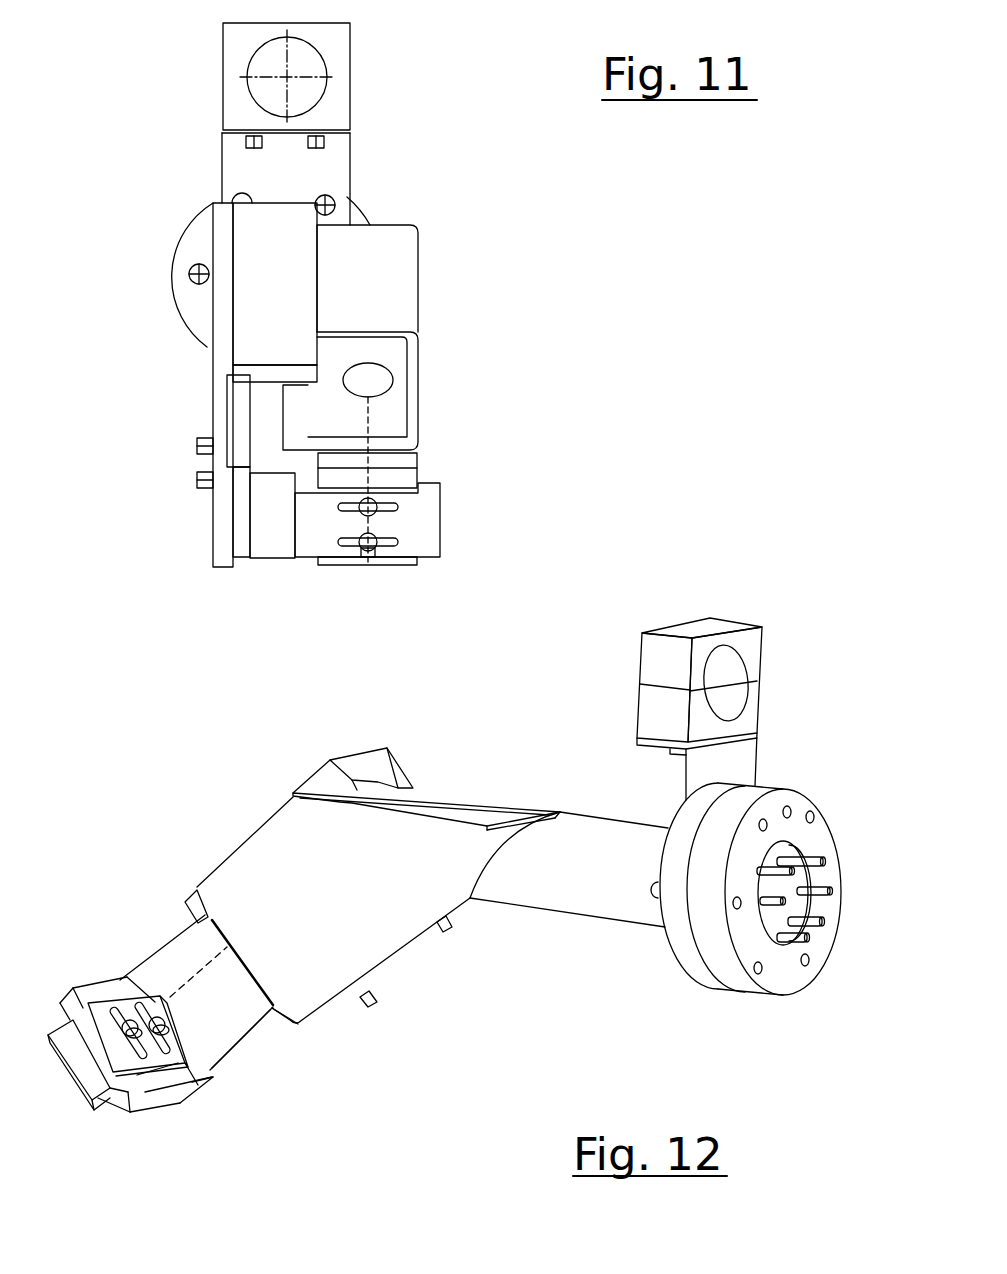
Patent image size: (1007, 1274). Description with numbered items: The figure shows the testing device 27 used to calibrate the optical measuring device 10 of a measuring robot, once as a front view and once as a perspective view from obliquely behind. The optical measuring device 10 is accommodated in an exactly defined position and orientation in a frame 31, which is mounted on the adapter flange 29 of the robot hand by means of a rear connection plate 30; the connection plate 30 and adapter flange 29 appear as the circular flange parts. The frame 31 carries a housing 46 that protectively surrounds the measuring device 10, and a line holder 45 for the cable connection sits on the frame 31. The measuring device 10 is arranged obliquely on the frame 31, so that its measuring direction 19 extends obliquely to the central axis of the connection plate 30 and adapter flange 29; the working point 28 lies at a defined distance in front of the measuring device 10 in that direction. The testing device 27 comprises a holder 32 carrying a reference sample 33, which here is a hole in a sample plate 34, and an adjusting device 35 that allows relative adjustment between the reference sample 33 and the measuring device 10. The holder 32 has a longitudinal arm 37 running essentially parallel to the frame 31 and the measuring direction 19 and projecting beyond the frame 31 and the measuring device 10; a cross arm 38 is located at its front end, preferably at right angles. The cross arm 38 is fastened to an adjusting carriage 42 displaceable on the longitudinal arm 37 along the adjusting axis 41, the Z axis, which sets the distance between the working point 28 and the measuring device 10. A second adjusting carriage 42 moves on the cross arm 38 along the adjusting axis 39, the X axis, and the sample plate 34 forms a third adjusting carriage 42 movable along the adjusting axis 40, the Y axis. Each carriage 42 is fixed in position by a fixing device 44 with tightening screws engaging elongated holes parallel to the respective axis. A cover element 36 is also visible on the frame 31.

In FIG. 11, the optical measuring device 10 is at (375, 375).
In FIG. 11, the measuring direction 19 is at (368, 423).
In FIG. 12, the measuring direction 19 is at (192, 980).
In FIG. 11, the testing device 27 is at (482, 316).
In FIG. 12, the testing device 27 is at (412, 1037).
In FIG. 12, the working point 28 is at (119, 1017).
In FIG. 11, the adapter flange 29 is at (218, 245).
In FIG. 12, the adapter flange 29 is at (778, 975).
In FIG. 11, the connection plate 30 is at (218, 245).
In FIG. 12, the connection plate 30 is at (693, 973).
In FIG. 11, the frame 31 is at (257, 250).
In FIG. 12, the frame 31 is at (552, 892).
In FIG. 11, the holder 32 is at (146, 385).
In FIG. 12, the holder 32 is at (158, 955).
In FIG. 12, the reference sample 33 is at (110, 978).
In FIG. 11, the sample plate 34 is at (458, 470).
In FIG. 12, the sample plate 34 is at (190, 1084).
In FIG. 11, the adjusting device 35 is at (190, 557).
In FIG. 12, the adjusting device 35 is at (117, 920).
In FIG. 11, the cover plate 36 is at (222, 334).
In FIG. 12, the cover plate 36 is at (370, 767).
In FIG. 11, the longitudinal arm 37 is at (221, 519).
In FIG. 12, the longitudinal arm 37 is at (217, 865).
In FIG. 11, the cross arm 38 is at (423, 528).
In FIG. 12, the cross arm 38 is at (80, 1085).
In FIG. 11, the adjusting axis 39 is at (343, 558).
In FIG. 12, the adjusting axis 39 is at (128, 1093).
In FIG. 11, the adjusting axis 40 is at (458, 470).
In FIG. 12, the adjusting axis 40 is at (190, 1084).
In FIG. 11, the adjusting axis 41 is at (237, 422).
In FIG. 12, the adjusting axis 41 is at (252, 1005).
In FIG. 11, the adjusting carriage 42 is at (403, 460).
In FIG. 12, the adjusting carriage 42 is at (192, 1093).
In FIG. 11, the fixing device 44 is at (197, 473).
In FIG. 11, the line holder 45 is at (330, 46).
In FIG. 12, the line holder 45 is at (723, 623).
In FIG. 11, the housing 46 is at (402, 255).
In FIG. 12, the housing 46 is at (408, 950).